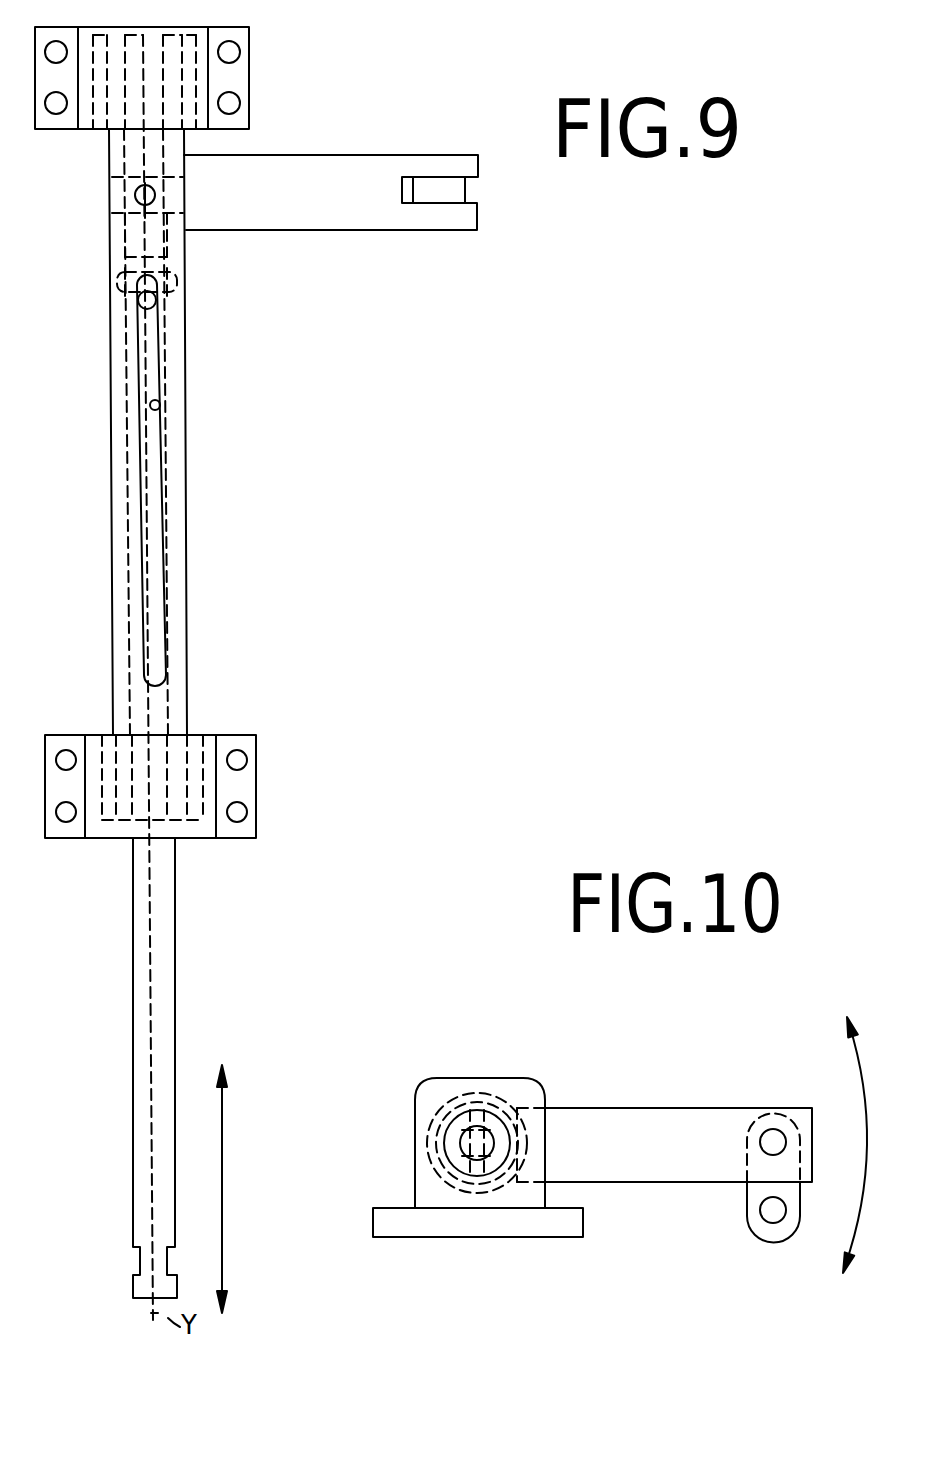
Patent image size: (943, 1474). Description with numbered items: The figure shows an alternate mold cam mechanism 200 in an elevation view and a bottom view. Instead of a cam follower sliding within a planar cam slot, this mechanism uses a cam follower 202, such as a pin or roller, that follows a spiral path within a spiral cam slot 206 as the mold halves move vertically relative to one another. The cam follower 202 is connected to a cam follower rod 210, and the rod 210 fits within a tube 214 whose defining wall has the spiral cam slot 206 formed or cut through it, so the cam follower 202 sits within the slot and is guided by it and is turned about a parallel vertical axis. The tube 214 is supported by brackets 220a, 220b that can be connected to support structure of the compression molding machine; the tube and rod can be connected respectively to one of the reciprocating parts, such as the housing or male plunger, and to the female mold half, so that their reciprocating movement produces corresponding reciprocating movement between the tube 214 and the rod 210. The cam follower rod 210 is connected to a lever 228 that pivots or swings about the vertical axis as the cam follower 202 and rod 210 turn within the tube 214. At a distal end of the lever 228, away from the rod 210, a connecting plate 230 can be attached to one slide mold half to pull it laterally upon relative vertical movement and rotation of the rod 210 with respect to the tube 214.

In FIG. 9, the alternate mold cam mechanism 200 is at (410, 106).
In FIG. 9, the cam follower 202 is at (156, 305).
In FIG. 9, the spiral cam slot 206 is at (159, 406).
In FIG. 9, the cam follower rod 210 is at (175, 968).
In FIG. 9, the tube 214 is at (187, 470).
In FIG. 9, the bracket 220a is at (248, 70).
In FIG. 9, the bracket 220b is at (257, 783).
In FIG. 10, the bracket 220b is at (523, 1080).
In FIG. 9, the lever 228 is at (353, 231).
In FIG. 10, the lever 228 is at (662, 1108).
In FIG. 10, the connecting plate 230 is at (800, 1190).